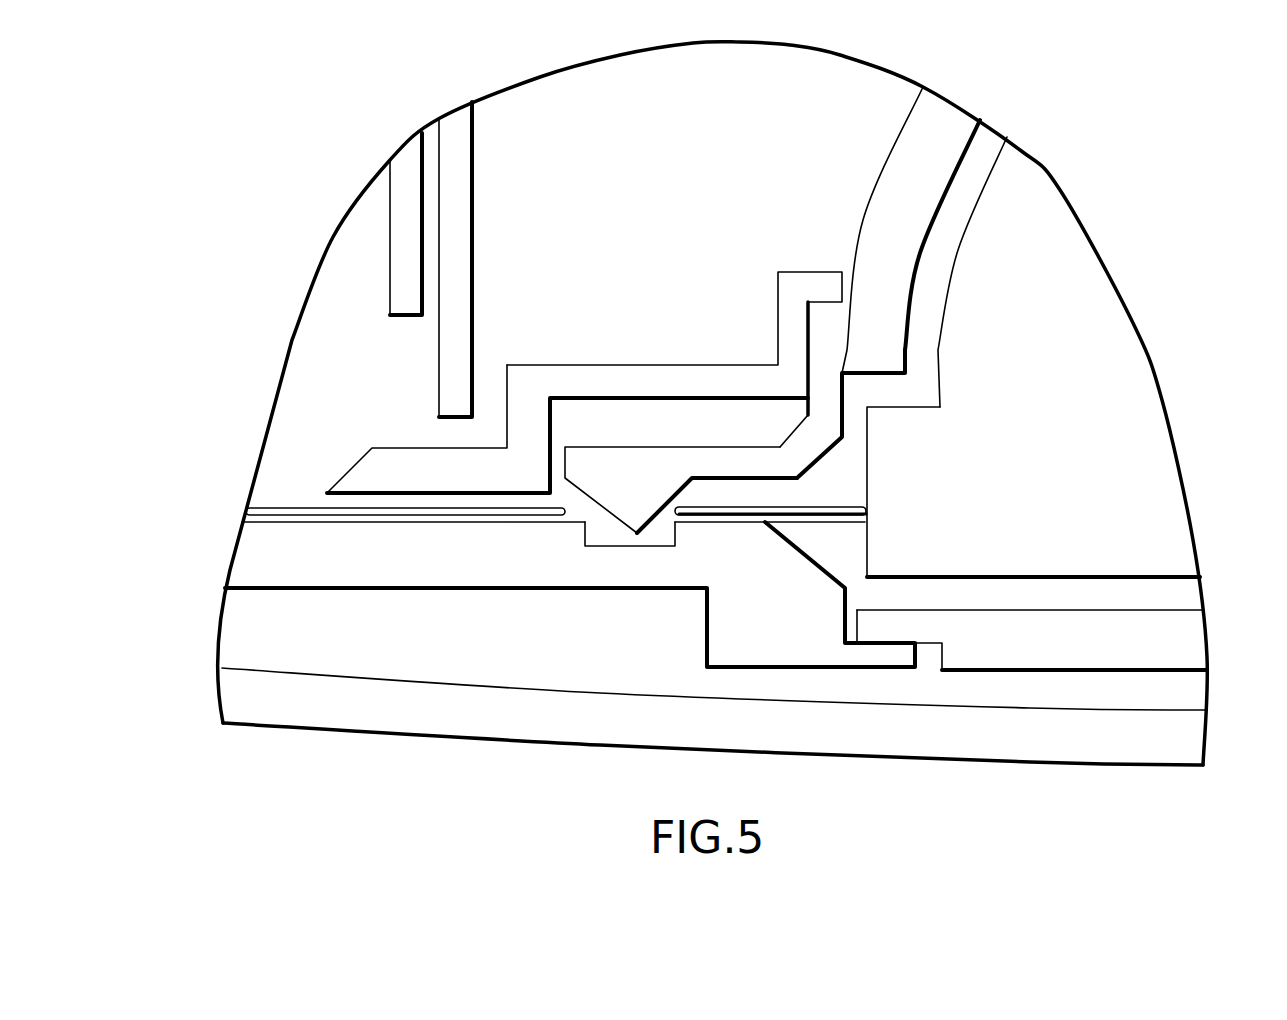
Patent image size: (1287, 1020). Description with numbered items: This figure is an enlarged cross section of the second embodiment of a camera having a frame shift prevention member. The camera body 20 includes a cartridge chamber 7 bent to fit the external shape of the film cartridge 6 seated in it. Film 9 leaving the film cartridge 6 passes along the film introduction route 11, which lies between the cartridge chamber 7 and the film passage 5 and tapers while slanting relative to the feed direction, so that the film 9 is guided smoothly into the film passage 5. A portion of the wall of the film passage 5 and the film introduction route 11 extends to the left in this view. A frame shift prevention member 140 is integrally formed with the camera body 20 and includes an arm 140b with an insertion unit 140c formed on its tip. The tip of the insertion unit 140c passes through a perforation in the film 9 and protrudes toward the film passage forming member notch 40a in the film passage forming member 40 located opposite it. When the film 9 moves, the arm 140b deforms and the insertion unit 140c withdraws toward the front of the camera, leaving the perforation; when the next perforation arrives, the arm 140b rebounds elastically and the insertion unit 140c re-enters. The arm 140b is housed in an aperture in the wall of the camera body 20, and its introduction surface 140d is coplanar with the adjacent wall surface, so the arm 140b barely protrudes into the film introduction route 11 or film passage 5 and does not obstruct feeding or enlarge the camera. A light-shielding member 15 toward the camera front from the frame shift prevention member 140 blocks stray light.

The film passage 5 is at (730, 493).
The film cartridge 6 is at (1118, 330).
The cartridge chamber 7 is at (985, 137).
The film 9 is at (833, 517).
The film introduction route 11 is at (855, 457).
The light-shielding member 15 is at (535, 378).
The camera body 20 is at (933, 103).
The film passage forming member 40 is at (413, 560).
The film passage forming member notch 40a is at (588, 545).
The frame shift prevention member 140 is at (678, 405).
The arm 140b is at (803, 450).
The insertion unit 140c is at (608, 462).
The introduction surface 140d is at (818, 458).